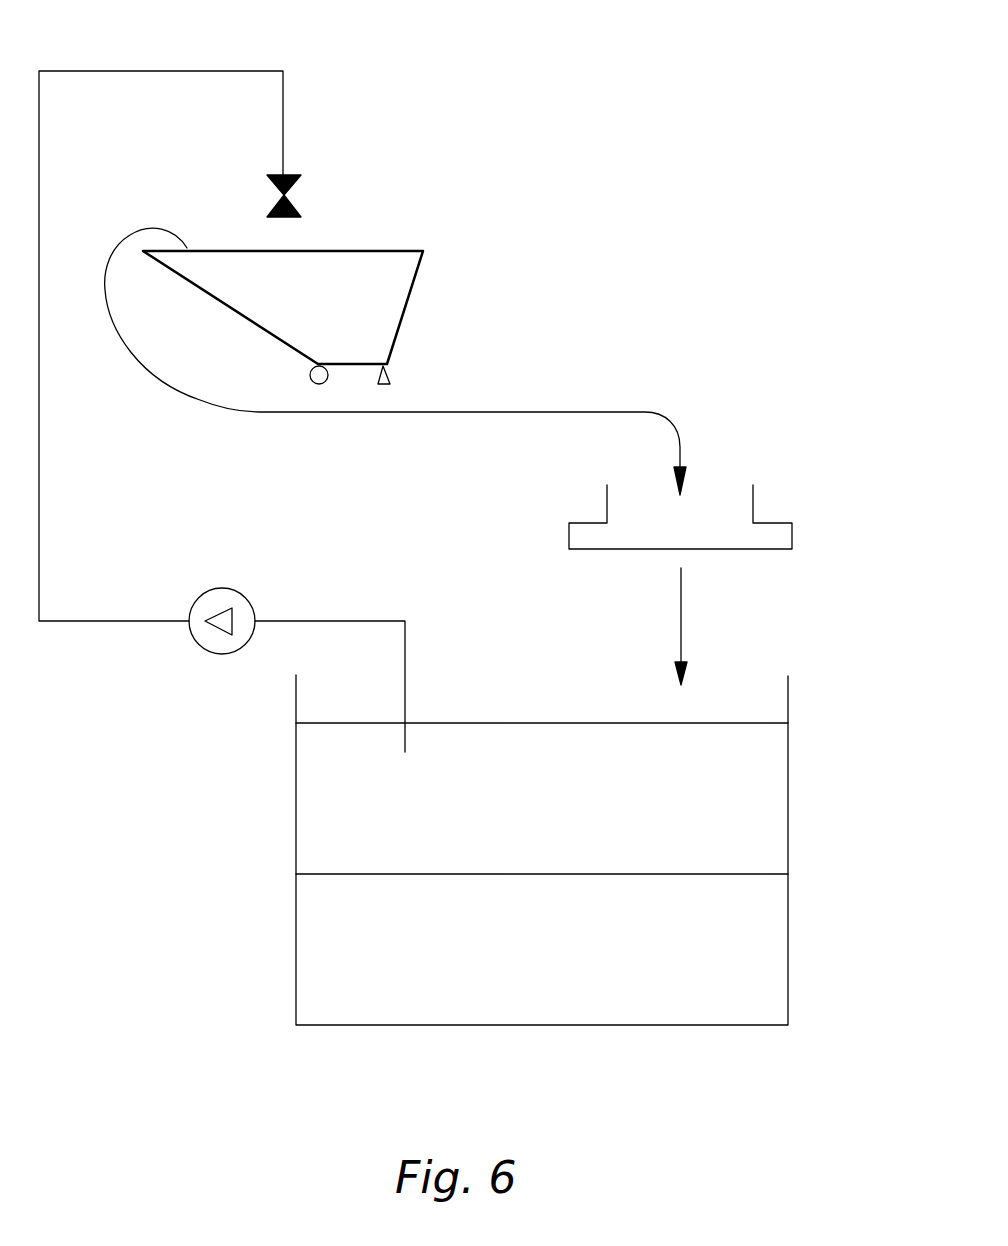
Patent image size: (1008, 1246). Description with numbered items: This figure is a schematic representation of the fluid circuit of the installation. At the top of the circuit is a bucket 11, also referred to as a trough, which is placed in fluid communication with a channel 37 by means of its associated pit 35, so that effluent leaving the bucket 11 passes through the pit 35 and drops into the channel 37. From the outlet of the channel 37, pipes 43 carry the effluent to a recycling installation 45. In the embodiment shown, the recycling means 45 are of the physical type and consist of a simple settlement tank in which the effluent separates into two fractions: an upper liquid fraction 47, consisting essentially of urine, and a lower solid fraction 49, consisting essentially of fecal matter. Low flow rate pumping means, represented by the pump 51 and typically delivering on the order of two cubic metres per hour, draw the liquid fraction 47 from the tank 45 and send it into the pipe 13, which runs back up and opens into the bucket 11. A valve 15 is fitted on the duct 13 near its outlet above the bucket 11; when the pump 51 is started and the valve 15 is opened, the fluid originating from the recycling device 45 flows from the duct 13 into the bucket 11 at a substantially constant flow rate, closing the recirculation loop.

The bucket 11 is at (384, 251).
The pipe 13 is at (131, 71).
The valve 15 is at (292, 175).
The pit 35 is at (550, 412).
The channel 37 is at (793, 526).
The pipes 43 is at (681, 617).
The recycling installation 45 is at (790, 905).
The upper liquid fraction 47 is at (766, 787).
The lower solid fraction 49 is at (765, 968).
The pump 51 is at (230, 589).